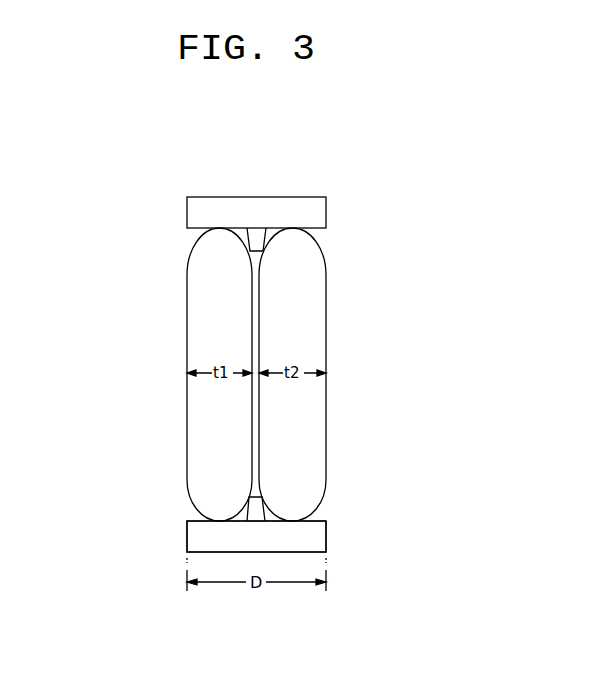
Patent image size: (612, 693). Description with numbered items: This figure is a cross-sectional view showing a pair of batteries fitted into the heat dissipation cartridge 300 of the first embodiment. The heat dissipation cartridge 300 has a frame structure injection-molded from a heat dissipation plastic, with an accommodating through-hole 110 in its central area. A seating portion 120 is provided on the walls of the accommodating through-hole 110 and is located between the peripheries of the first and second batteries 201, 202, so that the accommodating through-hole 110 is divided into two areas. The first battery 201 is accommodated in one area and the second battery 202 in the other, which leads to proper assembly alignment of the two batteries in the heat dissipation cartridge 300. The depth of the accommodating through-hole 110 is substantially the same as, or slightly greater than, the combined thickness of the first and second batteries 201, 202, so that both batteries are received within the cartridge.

The heat dissipation cartridge 300 is at (268, 153).
The seating portion 120 is at (250, 245).
The accommodating through-hole 110 is at (192, 514).
The first battery 201 is at (188, 343).
The second battery 202 is at (323, 339).